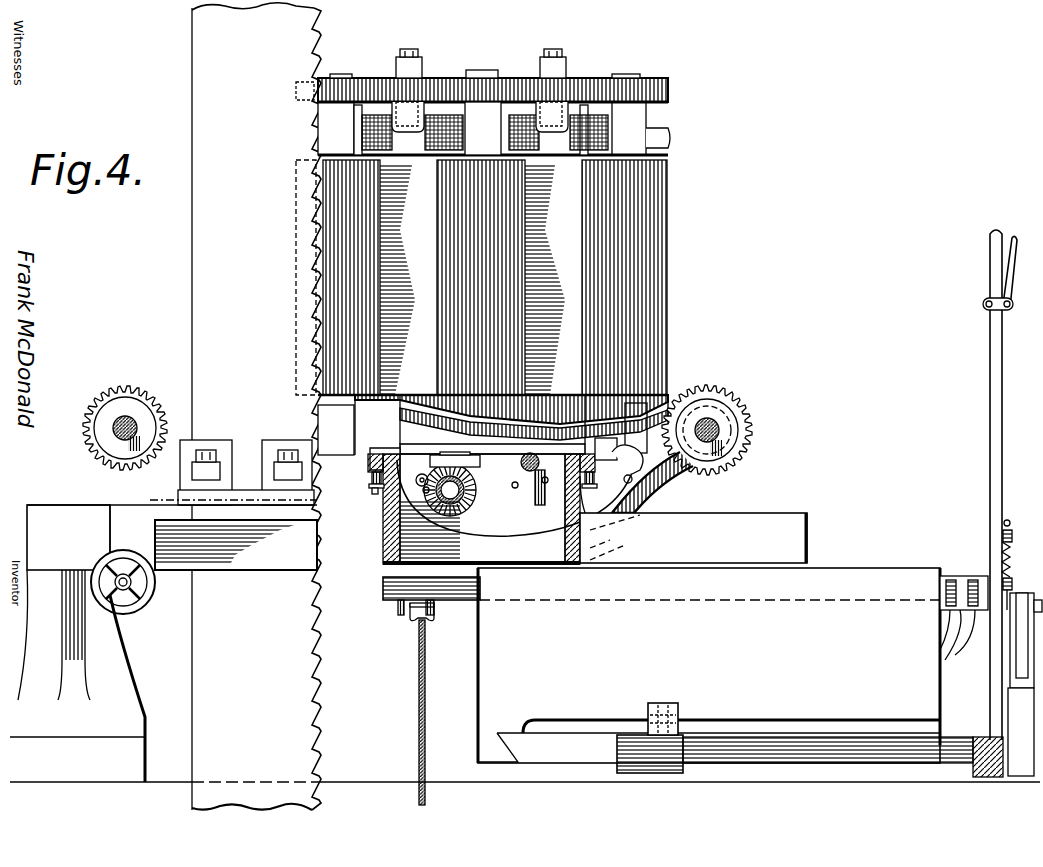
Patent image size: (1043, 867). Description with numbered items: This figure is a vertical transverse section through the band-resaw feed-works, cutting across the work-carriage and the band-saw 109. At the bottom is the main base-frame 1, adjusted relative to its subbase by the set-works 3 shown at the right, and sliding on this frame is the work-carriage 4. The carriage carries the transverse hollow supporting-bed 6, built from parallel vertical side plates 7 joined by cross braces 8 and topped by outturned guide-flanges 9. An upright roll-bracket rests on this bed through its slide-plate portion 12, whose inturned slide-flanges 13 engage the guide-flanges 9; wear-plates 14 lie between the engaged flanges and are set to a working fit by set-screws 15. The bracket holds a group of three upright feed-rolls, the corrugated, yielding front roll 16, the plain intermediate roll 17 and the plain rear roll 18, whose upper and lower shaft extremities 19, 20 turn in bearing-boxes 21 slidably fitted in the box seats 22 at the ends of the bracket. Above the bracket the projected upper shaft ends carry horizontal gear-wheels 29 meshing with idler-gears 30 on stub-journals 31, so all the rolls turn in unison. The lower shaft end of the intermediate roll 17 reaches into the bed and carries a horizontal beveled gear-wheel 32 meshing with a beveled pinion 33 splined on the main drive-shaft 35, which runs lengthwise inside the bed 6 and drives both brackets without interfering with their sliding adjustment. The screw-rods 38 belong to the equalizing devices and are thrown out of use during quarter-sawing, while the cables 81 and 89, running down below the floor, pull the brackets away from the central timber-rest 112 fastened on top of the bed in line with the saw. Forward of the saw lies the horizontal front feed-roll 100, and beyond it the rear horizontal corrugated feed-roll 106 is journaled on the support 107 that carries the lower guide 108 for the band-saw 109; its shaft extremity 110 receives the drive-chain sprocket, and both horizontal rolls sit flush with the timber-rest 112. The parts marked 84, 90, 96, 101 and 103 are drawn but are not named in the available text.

The main base-frame 1 is at (709, 665).
The set-works 3 is at (998, 503).
The work-carriage 4 is at (706, 538).
The supporting-bed 6 is at (482, 508).
The side plates 7 is at (383, 542).
The cross braces 8 is at (515, 498).
The guide-flanges 9 is at (370, 455).
The slide-plate portion 12 is at (492, 424).
The slide-flanges 13 is at (368, 464).
The wear-plates 14 is at (372, 480).
The set-screws 15 is at (374, 494).
The front upright feed-roll 16 is at (670, 250).
The intermediate upright feed-roll 17 is at (396, 238).
The rear upright feed-roll 18 is at (330, 236).
The upper shaft extremities 19 is at (338, 78).
The lower shaft extremities 20 is at (313, 505).
The bearing-boxes 21 is at (698, 370).
The box seats 22 is at (489, 128).
The horizontal gear-wheels 29 is at (338, 78).
The idler-gears 30 is at (420, 80).
The stub-journals 31 is at (410, 133).
The horizontal beveled gear-wheel 32 is at (452, 470).
The beveled pinion 33 is at (452, 516).
The main drive-shaft 35 is at (462, 496).
The screw-rods 38 is at (534, 455).
The cable 81 is at (528, 485).
The pin 84 is at (482, 492).
The pressure-cable 89 is at (410, 720).
The pivot 90 is at (417, 471).
The pivot pin 96 is at (632, 476).
The front feed-roll 100 is at (745, 420).
The shaft 101 is at (718, 433).
The arm 103 is at (660, 494).
The rear horizontal corrugated feed-roll 106 is at (122, 384).
The support 107 is at (172, 537).
The lower guide 108 is at (262, 444).
The band-saw 109 is at (196, 74).
The shaft extremity 110 is at (114, 436).
The timber-rest 112 is at (404, 398).